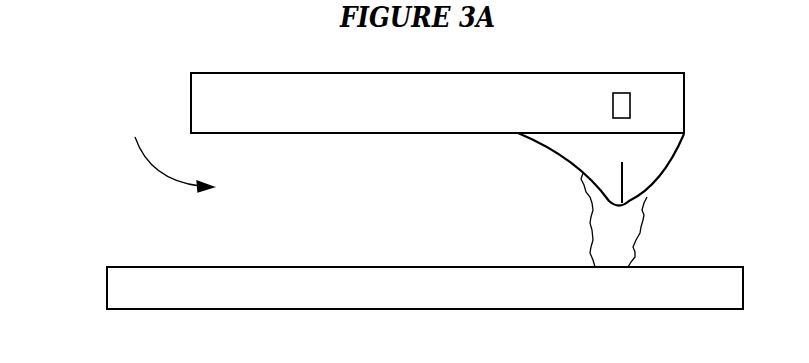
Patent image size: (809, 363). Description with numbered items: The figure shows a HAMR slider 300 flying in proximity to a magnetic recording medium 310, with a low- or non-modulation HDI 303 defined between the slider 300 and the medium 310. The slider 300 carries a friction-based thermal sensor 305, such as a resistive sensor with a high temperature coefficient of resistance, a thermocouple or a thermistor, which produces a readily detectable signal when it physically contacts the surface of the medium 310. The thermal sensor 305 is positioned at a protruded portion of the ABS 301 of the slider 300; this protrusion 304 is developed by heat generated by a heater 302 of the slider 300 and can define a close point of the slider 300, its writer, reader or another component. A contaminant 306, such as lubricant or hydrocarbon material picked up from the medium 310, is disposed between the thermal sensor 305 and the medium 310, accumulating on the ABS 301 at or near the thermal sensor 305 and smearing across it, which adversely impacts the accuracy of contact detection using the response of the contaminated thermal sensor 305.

The HAMR slider 300 is at (543, 73).
The ABS 301 is at (410, 135).
The heater 302 is at (622, 93).
The HDI 303 is at (168, 153).
The protrusion 304 is at (585, 147).
The thermal sensor 305 is at (624, 173).
The contaminant 306 is at (640, 235).
The magnetic recording medium 310 is at (183, 265).